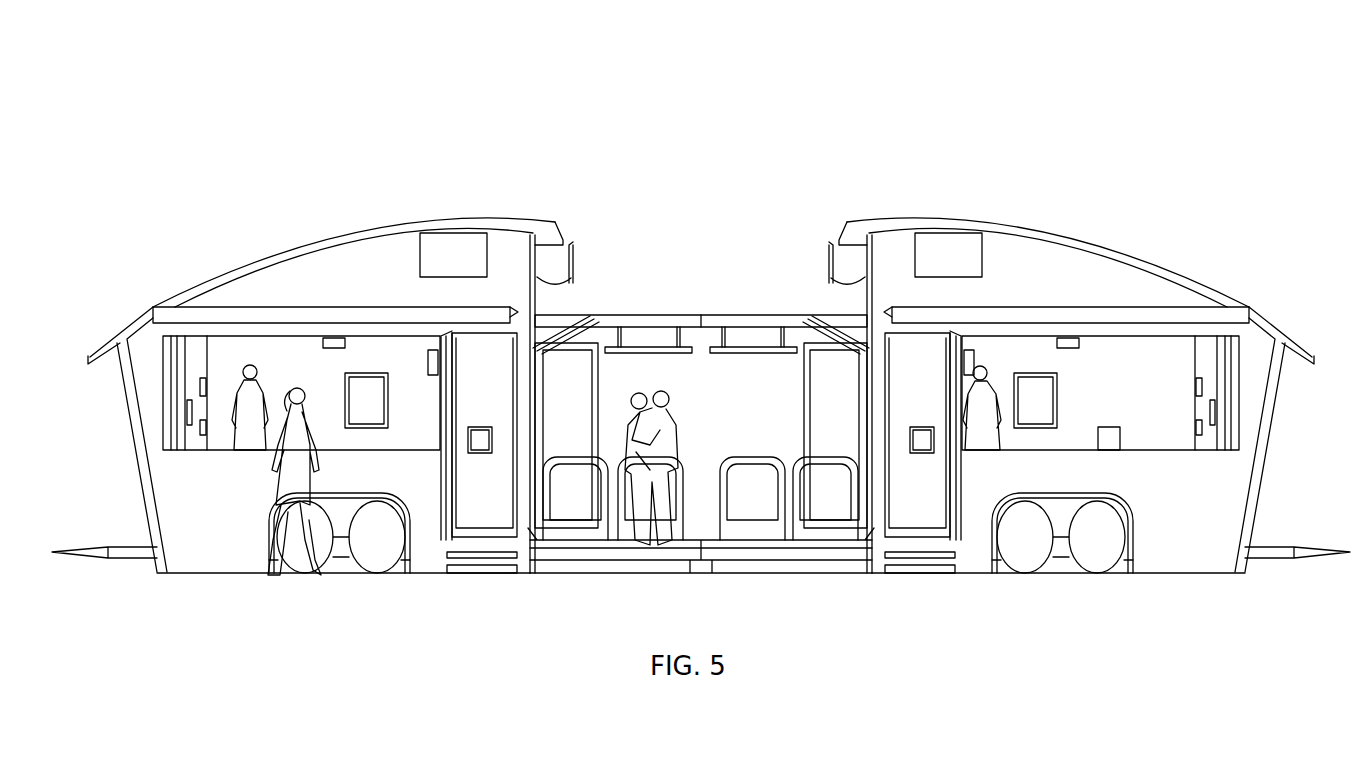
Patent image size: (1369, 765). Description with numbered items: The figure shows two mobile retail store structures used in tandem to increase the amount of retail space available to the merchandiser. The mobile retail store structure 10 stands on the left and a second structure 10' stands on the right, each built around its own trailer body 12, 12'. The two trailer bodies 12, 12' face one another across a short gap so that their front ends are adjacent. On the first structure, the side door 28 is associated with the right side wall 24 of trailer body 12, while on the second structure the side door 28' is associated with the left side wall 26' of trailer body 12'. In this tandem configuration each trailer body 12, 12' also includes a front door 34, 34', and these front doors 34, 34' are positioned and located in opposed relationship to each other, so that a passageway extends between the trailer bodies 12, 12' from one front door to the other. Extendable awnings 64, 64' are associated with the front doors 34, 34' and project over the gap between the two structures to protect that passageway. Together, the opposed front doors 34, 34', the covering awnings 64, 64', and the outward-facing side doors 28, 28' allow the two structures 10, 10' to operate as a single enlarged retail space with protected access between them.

The mobile retail store structure 10 is at (312, 341).
The second mobile retail store structure 10' is at (1089, 341).
The trailer body 12 is at (358, 246).
The second trailer body 12' is at (1044, 246).
The right side wall 24 is at (218, 477).
The left side wall 26' is at (1111, 461).
The side door 28 is at (470, 473).
The second side door 28' is at (943, 473).
The front door 34 is at (581, 309).
The second front door 34' is at (823, 309).
The extendable awning 64 is at (648, 309).
The second extendable awning 64' is at (751, 309).